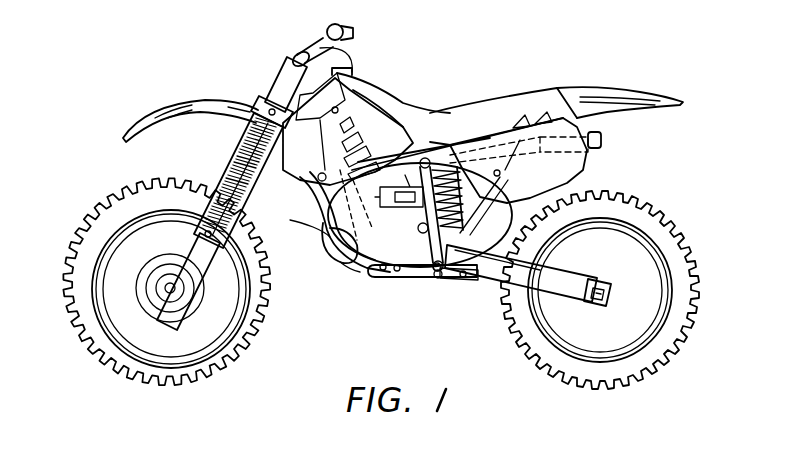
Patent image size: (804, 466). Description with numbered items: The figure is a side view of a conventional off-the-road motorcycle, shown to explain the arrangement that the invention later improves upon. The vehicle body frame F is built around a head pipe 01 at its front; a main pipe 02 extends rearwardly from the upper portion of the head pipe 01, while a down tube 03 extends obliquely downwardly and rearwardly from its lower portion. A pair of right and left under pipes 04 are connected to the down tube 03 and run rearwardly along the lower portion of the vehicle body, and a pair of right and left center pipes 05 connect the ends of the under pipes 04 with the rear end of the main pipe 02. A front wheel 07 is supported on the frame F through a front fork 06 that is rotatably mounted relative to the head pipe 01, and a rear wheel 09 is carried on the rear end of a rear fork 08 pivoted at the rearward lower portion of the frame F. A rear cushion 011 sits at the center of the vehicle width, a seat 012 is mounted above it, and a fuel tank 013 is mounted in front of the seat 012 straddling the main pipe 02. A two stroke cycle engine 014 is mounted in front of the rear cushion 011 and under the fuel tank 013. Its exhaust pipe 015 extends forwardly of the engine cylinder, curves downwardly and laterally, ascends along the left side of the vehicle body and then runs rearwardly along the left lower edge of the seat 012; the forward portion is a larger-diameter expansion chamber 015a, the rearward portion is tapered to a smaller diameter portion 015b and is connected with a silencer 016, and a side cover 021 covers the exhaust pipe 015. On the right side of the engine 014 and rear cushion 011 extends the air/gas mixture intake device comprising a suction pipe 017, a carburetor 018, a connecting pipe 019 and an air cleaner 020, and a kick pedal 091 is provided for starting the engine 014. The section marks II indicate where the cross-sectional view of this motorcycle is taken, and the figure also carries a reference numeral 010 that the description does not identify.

The head pipe 01 is at (287, 100).
The main pipe 02 is at (322, 50).
The down tube 03 is at (313, 205).
The under pipes 04 is at (372, 278).
The center pipes 05 is at (435, 278).
The front fork 06 is at (195, 255).
The front wheel 07 is at (192, 385).
The rear fork 08 is at (560, 287).
The rear wheel 09 is at (657, 343).
The suspension link arm 010 is at (452, 282).
The rear cushion 011 is at (455, 180).
The seat 012 is at (460, 103).
The fuel tank 013 is at (356, 105).
The two stroke cycle engine 014 is at (397, 270).
The exhaust pipe 015 is at (337, 237).
The expansion chamber 015a is at (397, 170).
The smaller diameter portion 015b is at (505, 162).
The silencer 016 is at (600, 135).
The suction pipe 017 is at (338, 251).
The carburetor 018 is at (420, 217).
The connecting pipe 019 is at (550, 240).
The air cleaner 020 is at (563, 192).
The side cover 021 is at (570, 167).
The kick pedal 091 is at (343, 273).
The vehicle body frame F is at (340, 284).
The section line II is at (415, 97).